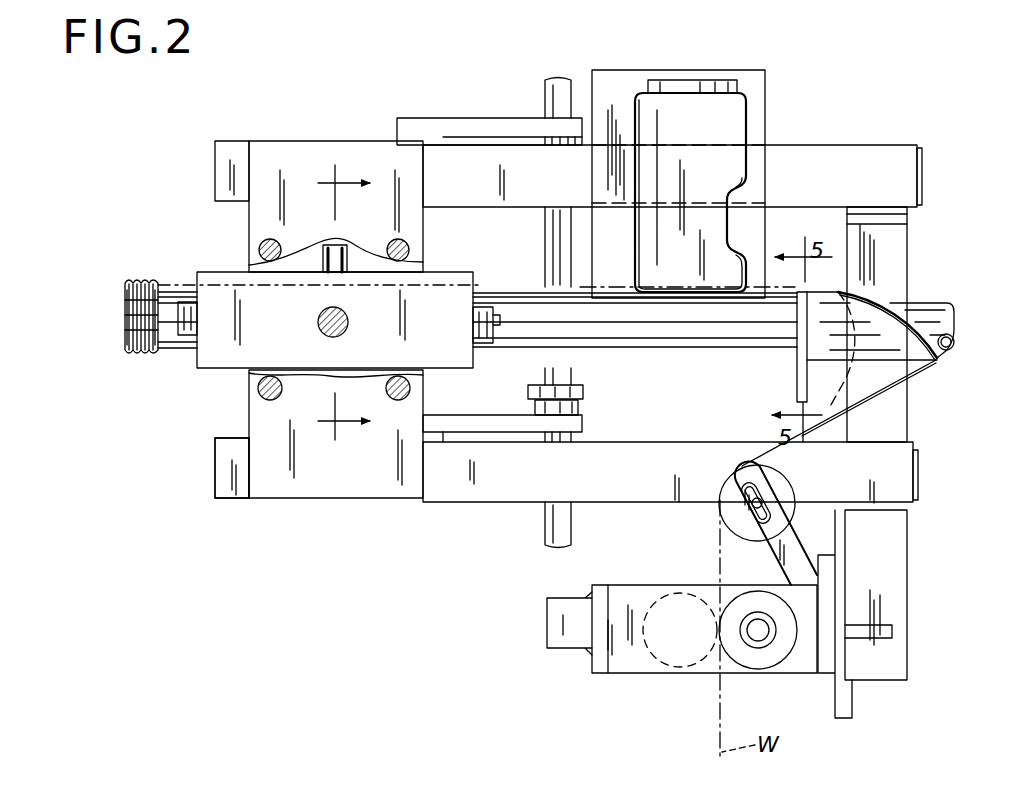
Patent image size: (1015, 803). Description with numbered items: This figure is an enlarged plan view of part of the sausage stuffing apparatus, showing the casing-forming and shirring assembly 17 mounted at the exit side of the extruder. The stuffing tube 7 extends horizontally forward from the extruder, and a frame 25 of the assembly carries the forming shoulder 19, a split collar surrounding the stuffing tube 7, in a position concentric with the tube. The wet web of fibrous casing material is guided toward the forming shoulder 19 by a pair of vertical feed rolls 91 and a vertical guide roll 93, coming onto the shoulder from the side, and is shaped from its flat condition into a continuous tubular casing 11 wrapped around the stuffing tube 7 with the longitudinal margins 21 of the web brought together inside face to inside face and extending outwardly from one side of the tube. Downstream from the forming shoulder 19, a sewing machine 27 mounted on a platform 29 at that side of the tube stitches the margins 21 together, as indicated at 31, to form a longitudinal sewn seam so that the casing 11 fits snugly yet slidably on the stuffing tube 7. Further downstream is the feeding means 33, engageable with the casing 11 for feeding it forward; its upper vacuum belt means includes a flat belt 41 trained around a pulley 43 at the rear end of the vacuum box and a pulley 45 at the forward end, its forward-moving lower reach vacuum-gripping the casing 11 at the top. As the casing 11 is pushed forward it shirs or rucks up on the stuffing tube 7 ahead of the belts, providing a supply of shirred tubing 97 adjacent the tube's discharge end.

The casing-forming and shirring assembly 17 is at (288, 102).
The platform 29 is at (766, 70).
The sewing machine 27 is at (752, 115).
The shirred tubing 97 is at (140, 278).
The longitudinal margins of the web 21 is at (483, 286).
The stitching 31 is at (597, 290).
The stuffing tube 7 is at (912, 302).
The sausage casing 11 is at (635, 360).
The pulley 45 is at (193, 346).
The casing feeding means 33 is at (222, 374).
The frame 25 is at (212, 492).
The pulley 43 is at (480, 348).
The flat belt 41 is at (502, 320).
The forming shoulder 19 is at (928, 362).
The vertical guide roll 93 is at (775, 486).
The vertical feed rolls 91 is at (655, 662).